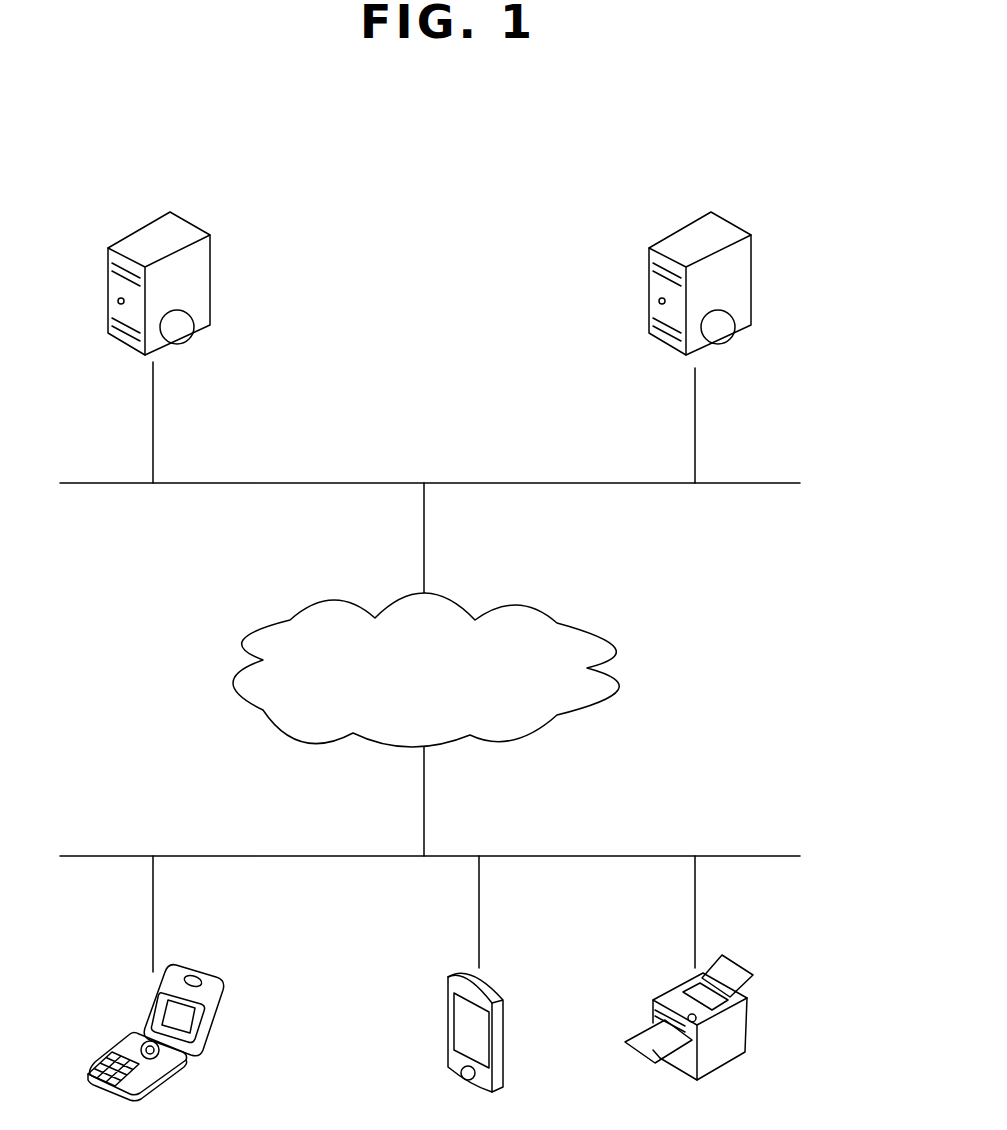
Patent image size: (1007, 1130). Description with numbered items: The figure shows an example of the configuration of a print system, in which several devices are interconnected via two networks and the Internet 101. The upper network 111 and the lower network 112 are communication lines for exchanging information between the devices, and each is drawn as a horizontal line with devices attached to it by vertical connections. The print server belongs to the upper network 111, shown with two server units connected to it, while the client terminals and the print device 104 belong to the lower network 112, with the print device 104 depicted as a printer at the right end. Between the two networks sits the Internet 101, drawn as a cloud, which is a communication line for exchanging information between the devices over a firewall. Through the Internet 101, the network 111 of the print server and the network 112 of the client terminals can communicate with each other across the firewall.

The Internet 101 is at (577, 623).
The print device 104 is at (673, 987).
The network 111 is at (750, 482).
The network 112 is at (750, 855).